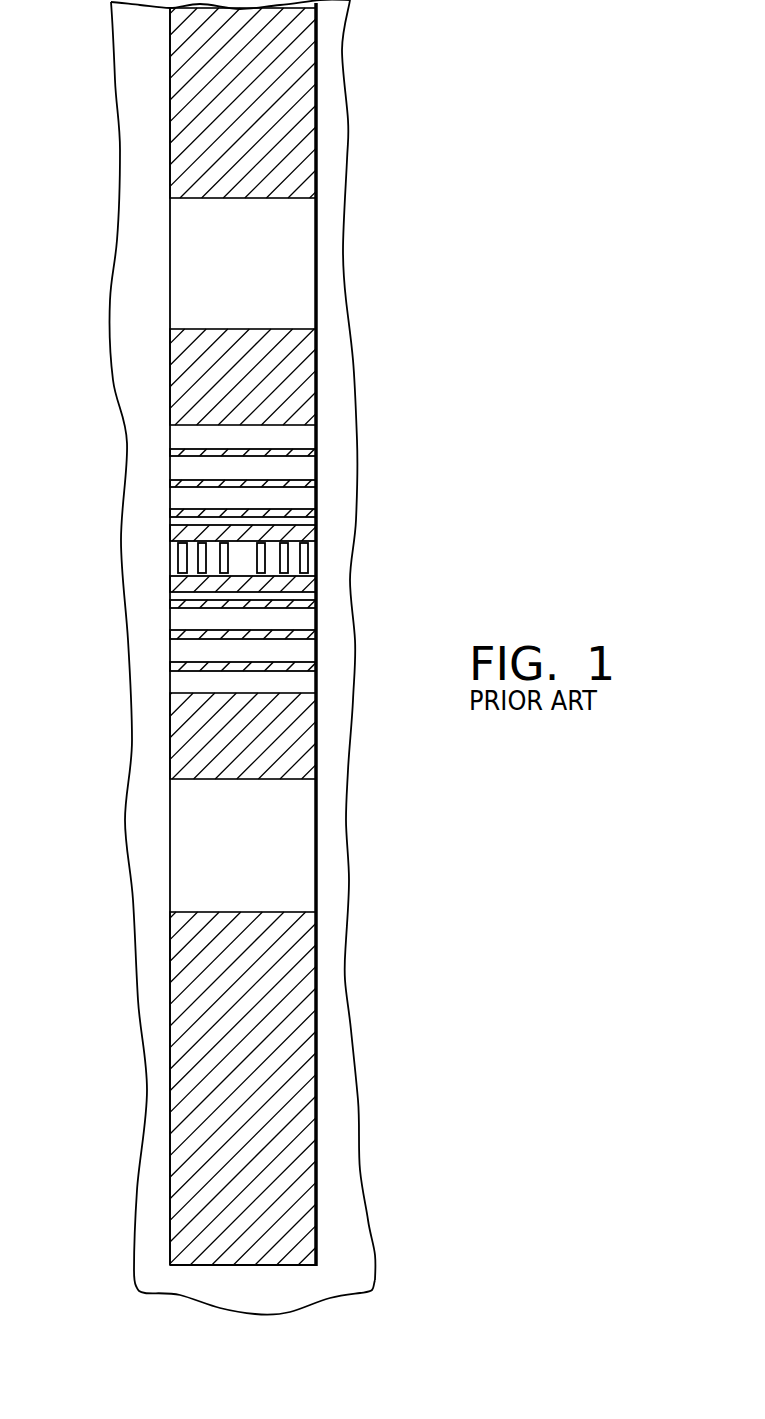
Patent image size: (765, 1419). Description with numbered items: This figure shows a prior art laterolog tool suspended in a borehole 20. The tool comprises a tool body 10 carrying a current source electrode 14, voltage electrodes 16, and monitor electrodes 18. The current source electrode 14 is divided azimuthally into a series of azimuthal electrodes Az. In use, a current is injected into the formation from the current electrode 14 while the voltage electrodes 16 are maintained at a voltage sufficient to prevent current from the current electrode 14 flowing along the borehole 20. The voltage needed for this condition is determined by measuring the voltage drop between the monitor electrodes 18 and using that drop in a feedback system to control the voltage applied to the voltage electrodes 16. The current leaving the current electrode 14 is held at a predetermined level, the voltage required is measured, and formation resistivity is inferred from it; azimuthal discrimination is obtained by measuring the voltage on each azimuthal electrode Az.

The tool body 10 is at (133, 229).
The current source electrode 14 is at (243, 557).
The voltage electrodes 16 is at (300, 163).
The monitor electrodes 18 is at (293, 507).
The borehole 20 is at (262, 1303).
The azimuthal electrodes Az is at (200, 557).